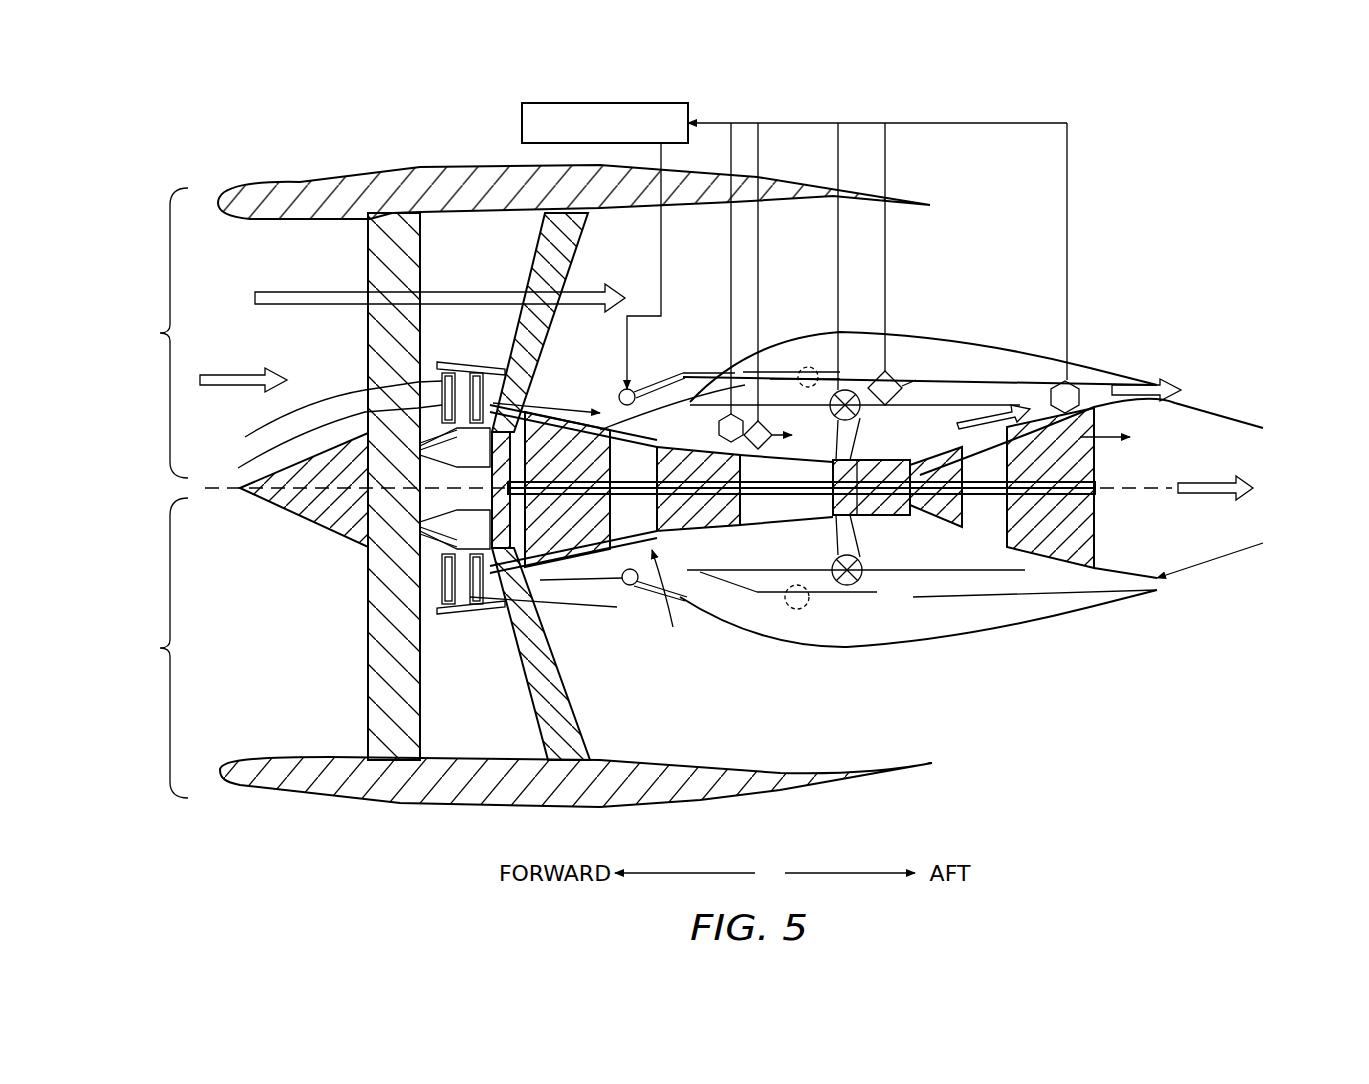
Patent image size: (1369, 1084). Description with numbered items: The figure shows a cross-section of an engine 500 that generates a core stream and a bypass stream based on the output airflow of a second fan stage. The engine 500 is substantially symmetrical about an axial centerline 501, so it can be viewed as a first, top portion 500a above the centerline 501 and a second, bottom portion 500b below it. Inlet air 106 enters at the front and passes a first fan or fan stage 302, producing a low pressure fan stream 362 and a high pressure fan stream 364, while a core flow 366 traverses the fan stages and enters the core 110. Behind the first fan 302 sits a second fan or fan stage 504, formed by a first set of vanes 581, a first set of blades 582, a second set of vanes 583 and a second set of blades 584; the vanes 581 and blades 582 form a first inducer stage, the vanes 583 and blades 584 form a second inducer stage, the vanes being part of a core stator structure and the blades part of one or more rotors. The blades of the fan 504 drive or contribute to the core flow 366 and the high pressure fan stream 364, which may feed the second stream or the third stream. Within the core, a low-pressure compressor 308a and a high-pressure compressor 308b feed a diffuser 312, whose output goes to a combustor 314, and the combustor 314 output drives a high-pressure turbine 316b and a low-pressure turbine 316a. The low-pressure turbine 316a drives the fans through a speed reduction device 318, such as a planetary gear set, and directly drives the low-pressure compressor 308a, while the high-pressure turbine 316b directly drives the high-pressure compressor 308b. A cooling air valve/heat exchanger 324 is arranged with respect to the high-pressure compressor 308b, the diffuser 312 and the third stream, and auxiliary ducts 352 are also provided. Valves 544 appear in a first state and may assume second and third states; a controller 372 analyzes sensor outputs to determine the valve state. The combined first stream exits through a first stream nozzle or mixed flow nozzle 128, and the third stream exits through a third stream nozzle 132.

The engine 500 is at (1221, 235).
The first, top portion 500a is at (135, 333).
The second, bottom portion 500b is at (136, 648).
The inlet airflow 106 is at (240, 377).
The core 110 is at (678, 602).
The first stream nozzle or mixed flow nozzle 128 is at (1258, 480).
The third stream nozzle 132 is at (1165, 376).
The first fan or fan stage 302 is at (368, 690).
The low-pressure compressor 308a is at (570, 517).
The high-pressure compressor 308b is at (720, 540).
The diffuser 312 is at (930, 355).
The combustor 314 is at (880, 540).
The low-pressure turbine 316a is at (1093, 512).
The high-pressure turbine 316b is at (947, 540).
The speed reduction device 318 is at (438, 537).
The cooling air valve/heat exchanger 324 is at (848, 388).
The auxiliary ducts 352 is at (805, 363).
The low pressure fan stream 362 is at (262, 290).
The high pressure fan stream 364 is at (328, 393).
The core flow 366 is at (267, 448).
The controller 372 is at (522, 123).
The axial centerline 501 is at (224, 505).
The second fan or fan stage 504 is at (468, 612).
The valves 544 is at (663, 377).
The first set of vanes 581 is at (450, 363).
The first set of blades 582 is at (460, 367).
The second set of vanes 583 is at (483, 367).
The second set of blades 584 is at (510, 368).